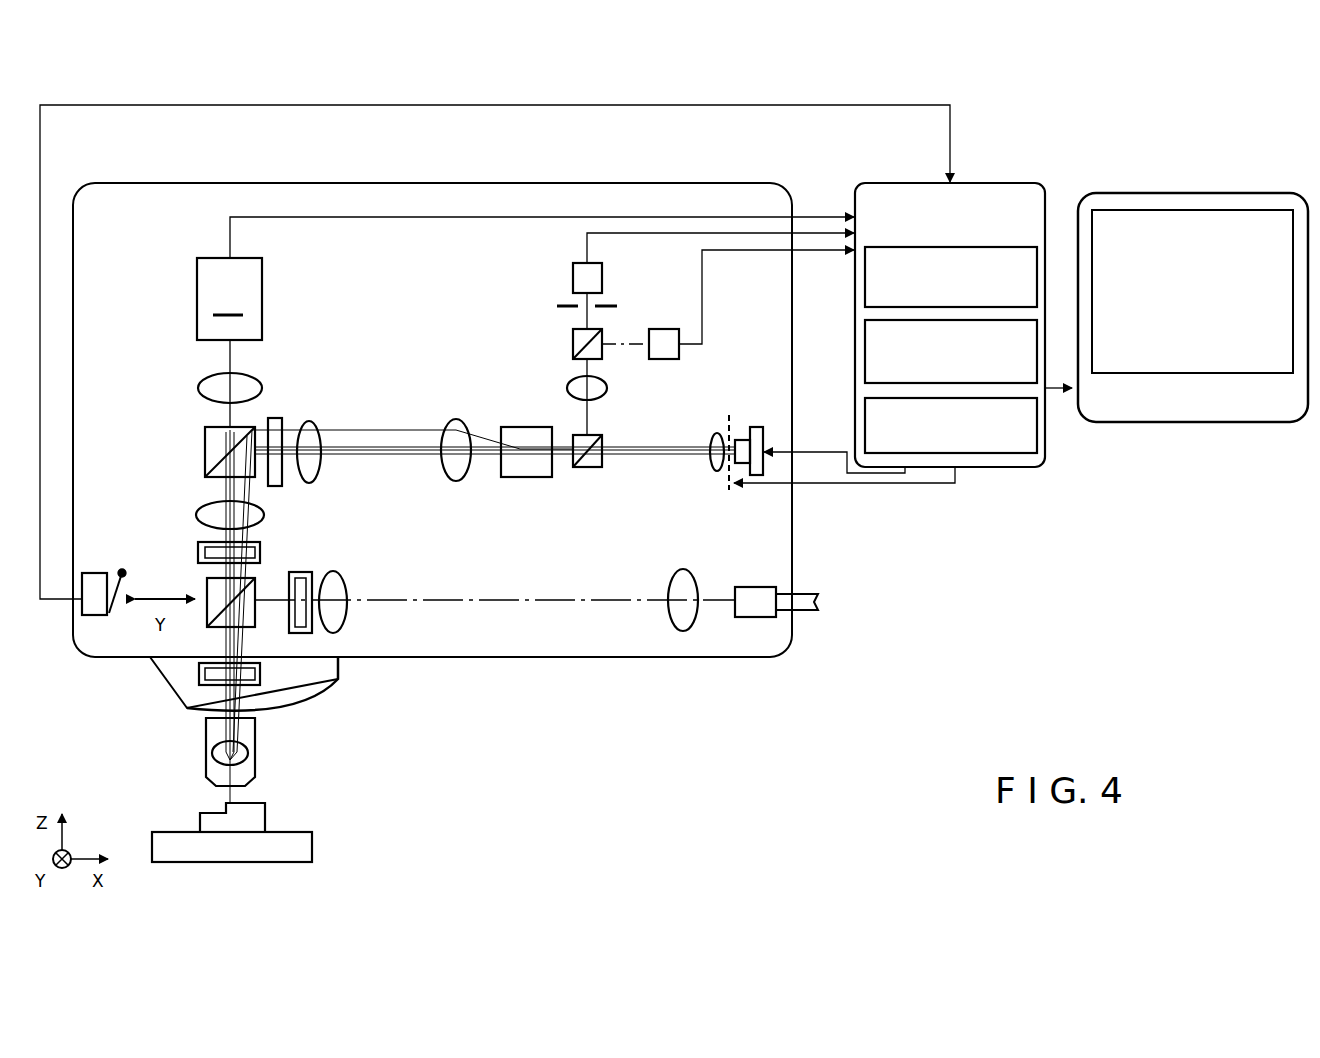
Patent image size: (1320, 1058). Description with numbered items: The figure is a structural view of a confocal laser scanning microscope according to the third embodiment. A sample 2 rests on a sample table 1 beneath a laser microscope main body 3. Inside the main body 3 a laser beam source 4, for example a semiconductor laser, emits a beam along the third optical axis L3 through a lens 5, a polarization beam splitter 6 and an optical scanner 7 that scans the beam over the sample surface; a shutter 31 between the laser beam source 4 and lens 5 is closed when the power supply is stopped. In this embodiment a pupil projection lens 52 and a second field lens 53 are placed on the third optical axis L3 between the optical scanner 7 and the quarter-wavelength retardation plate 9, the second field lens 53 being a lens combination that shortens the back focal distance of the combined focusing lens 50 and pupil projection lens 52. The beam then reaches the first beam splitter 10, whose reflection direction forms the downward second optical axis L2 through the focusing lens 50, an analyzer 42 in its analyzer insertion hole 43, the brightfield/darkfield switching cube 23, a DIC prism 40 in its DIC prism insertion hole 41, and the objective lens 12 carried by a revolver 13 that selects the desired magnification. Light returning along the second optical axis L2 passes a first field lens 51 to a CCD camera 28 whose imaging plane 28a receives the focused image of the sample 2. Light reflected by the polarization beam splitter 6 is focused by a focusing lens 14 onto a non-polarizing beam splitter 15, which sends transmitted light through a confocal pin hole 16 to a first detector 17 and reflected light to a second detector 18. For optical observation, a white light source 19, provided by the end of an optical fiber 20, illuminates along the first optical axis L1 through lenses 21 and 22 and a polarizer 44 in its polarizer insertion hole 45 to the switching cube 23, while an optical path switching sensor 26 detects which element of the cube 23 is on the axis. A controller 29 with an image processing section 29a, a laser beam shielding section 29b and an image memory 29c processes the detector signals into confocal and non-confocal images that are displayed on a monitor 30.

The sample table 1 is at (312, 848).
The sample 2 is at (265, 810).
The laser microscope main body 3 is at (441, 182).
The laser beam source 4 is at (757, 427).
The lens 5 is at (717, 433).
The polarization beam splitter 6 is at (588, 468).
The optical scanner 7 is at (528, 427).
The quarter-wavelength retardation plate 9 is at (275, 418).
The first beam splitter 10 is at (205, 449).
The objective lens 12 is at (212, 753).
The revolver 13 is at (322, 698).
The focusing lens 14 is at (607, 388).
The beam splitter 15 is at (573, 344).
The confocal pin hole 16 is at (557, 306).
The first detector 17 is at (573, 272).
The second detector 18 is at (664, 329).
The white light source 19 is at (756, 587).
The optical fiber 20 is at (806, 594).
The lens 21 is at (683, 569).
The lens 22 is at (344, 583).
The brightfield/darkfield switching cube 23 is at (255, 610).
The optical path switching sensor 26 is at (100, 573).
The CCD camera 28 is at (197, 305).
The imaging plane 28a is at (243, 315).
The controller 29 is at (1012, 183).
The image processing section 29a is at (865, 284).
The laser beam shielding section 29b is at (865, 347).
The image memory 29c is at (865, 419).
The monitor 30 is at (1171, 193).
The shutter 31 is at (727, 485).
The DIC prism 40 is at (209, 675).
The DIC prism insertion hole 41 is at (199, 673).
The analyzer 42 is at (210, 554).
The analyzer insertion hole 43 is at (198, 546).
The polarizer 44 is at (300, 578).
The polarizer insertion hole 45 is at (312, 580).
The focusing lens 50 is at (197, 515).
The first field lens 51 is at (198, 389).
The pupil projection lens 52 is at (456, 419).
The second field lens 53 is at (309, 420).
The first optical axis L1 is at (505, 598).
The second optical axis L2 is at (225, 490).
The third optical axis L3 is at (636, 455).